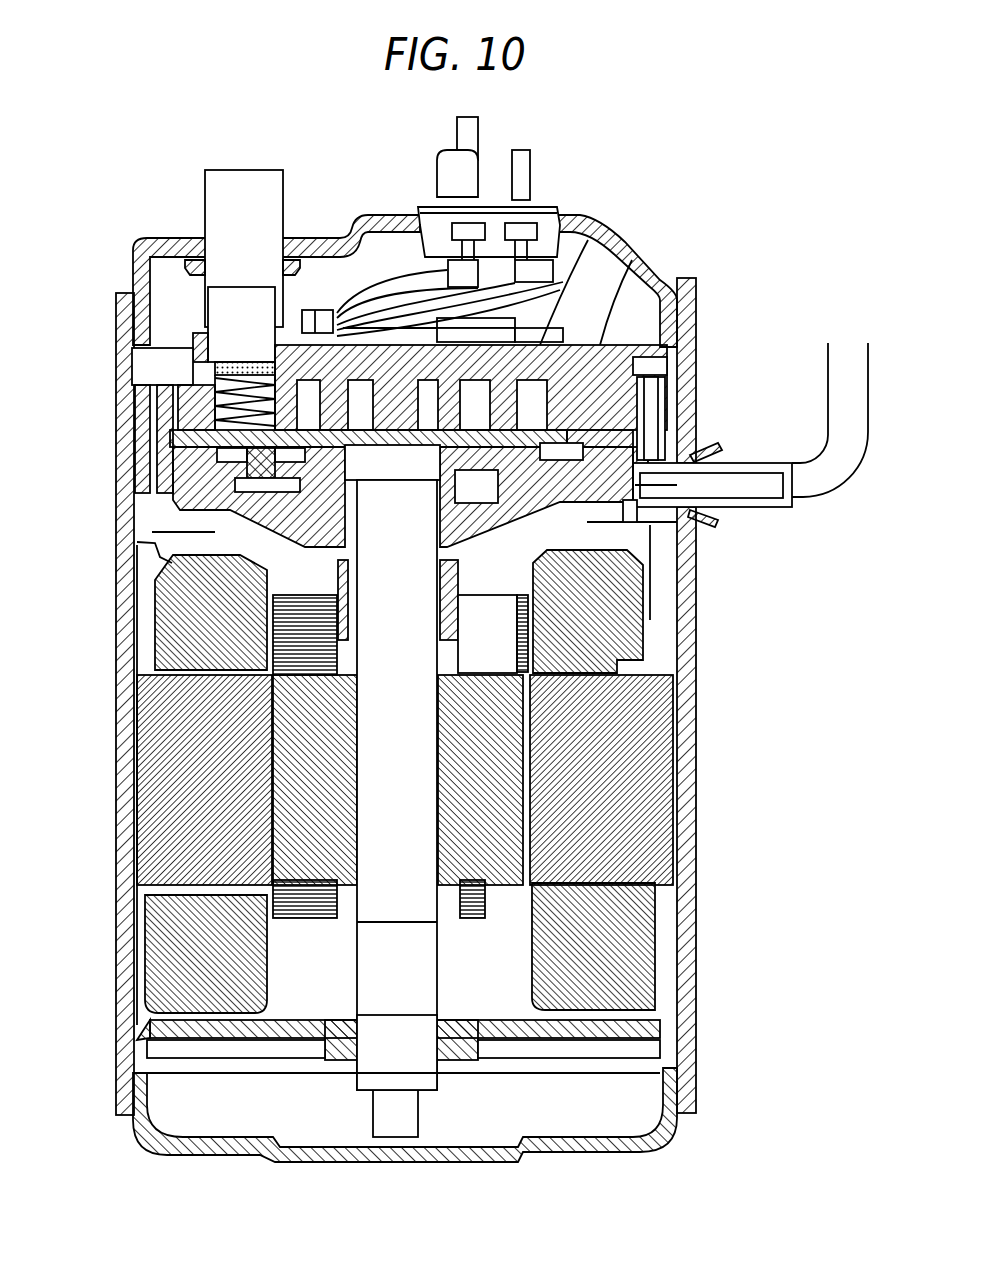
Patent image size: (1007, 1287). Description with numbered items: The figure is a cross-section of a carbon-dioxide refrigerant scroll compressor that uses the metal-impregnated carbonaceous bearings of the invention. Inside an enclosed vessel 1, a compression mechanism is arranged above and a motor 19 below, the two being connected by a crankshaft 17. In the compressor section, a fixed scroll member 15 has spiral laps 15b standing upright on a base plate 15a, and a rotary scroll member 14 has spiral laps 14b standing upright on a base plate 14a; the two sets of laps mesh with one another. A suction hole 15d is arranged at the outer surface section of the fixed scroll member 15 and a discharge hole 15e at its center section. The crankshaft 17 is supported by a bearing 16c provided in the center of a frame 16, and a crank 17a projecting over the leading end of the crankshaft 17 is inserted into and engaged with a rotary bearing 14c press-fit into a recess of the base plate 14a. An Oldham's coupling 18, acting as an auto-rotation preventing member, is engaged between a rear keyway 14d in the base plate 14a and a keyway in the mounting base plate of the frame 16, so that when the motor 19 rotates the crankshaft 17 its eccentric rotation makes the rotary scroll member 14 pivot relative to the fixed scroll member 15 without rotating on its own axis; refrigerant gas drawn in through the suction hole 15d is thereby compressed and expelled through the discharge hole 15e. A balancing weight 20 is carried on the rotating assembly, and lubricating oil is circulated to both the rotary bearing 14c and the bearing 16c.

The enclosed vessel 1 is at (126, 318).
The rotary scroll member 14 is at (570, 443).
The base plate 14a is at (662, 418).
The spiral laps 14b is at (660, 393).
The rotary bearing 14c is at (260, 523).
The rear keyway 14d is at (230, 460).
The fixed scroll member 15 is at (648, 333).
The base plate 15a is at (632, 260).
The spiral laps 15b is at (588, 240).
The suction hole 15d is at (215, 412).
The discharge hole 15e is at (393, 342).
The frame 16 is at (660, 525).
The bearing 16c is at (270, 705).
The crankshaft 17 is at (377, 1048).
The crank 17a is at (235, 560).
The Oldham's coupling 18 is at (265, 482).
The motor 19 is at (595, 765).
The balancing weight 20 is at (643, 563).